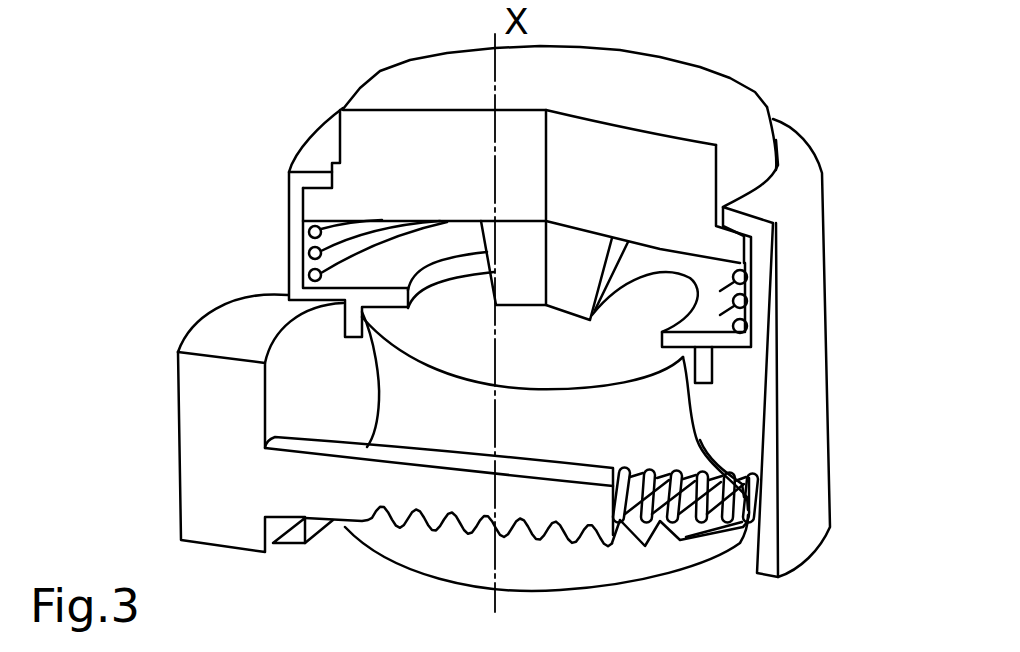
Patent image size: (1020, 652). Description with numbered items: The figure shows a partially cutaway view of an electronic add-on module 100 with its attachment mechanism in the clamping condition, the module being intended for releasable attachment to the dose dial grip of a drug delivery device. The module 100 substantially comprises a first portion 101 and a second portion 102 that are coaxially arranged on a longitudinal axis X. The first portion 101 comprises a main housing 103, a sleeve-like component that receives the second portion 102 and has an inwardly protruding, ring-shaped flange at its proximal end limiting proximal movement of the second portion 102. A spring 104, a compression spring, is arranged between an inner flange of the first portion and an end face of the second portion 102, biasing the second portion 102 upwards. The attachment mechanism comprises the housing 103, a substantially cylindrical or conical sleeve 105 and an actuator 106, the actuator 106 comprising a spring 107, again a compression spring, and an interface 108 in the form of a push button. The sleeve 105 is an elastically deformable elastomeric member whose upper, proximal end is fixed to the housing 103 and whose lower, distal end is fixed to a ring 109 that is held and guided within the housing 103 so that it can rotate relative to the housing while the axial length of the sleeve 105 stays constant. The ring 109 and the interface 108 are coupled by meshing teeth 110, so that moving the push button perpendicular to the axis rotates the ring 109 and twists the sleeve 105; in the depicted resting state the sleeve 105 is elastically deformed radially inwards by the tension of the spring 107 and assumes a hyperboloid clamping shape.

The electronic add-on module 100 is at (232, 125).
The first portion 101 is at (789, 227).
The second portion 102 is at (708, 134).
The main housing 103 is at (265, 235).
The spring 104 is at (278, 261).
The sleeve 105 is at (655, 415).
The actuator 106 is at (155, 350).
The spring 107 is at (687, 482).
The interface 108 is at (172, 452).
The ring 109 is at (625, 555).
The meshing teeth 110 is at (385, 528).